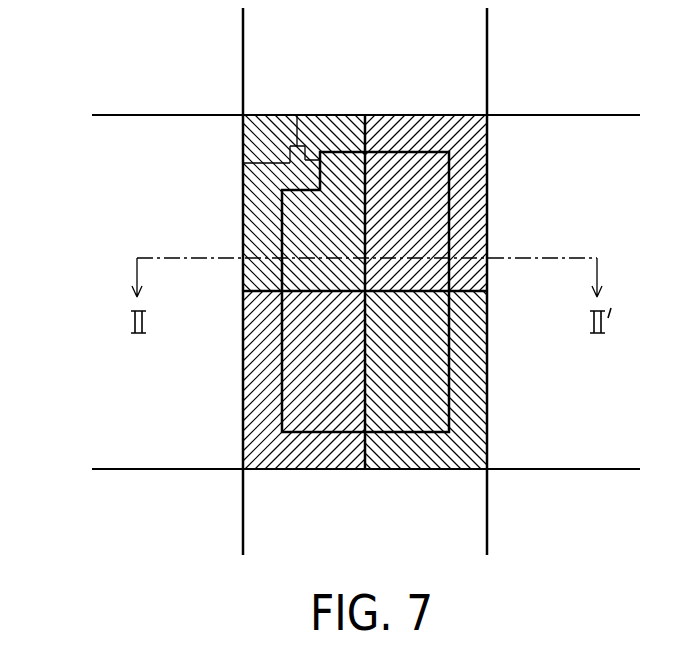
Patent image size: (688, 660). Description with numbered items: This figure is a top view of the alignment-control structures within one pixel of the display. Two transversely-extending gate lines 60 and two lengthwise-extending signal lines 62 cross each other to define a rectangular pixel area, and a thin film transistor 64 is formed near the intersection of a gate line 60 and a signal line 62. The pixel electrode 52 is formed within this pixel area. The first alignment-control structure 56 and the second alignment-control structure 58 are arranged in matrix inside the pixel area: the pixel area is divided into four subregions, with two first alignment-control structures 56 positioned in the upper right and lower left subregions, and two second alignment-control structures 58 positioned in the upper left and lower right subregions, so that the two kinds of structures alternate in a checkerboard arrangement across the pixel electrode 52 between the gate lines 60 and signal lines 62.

The pixel electrode 52 is at (437, 210).
The first alignment-control structure 56 is at (427, 133).
The second alignment-control structure 58 is at (336, 128).
The gate line 60 is at (131, 114).
The signal line 62 is at (242, 32).
The thin film transistor 64 is at (288, 170).